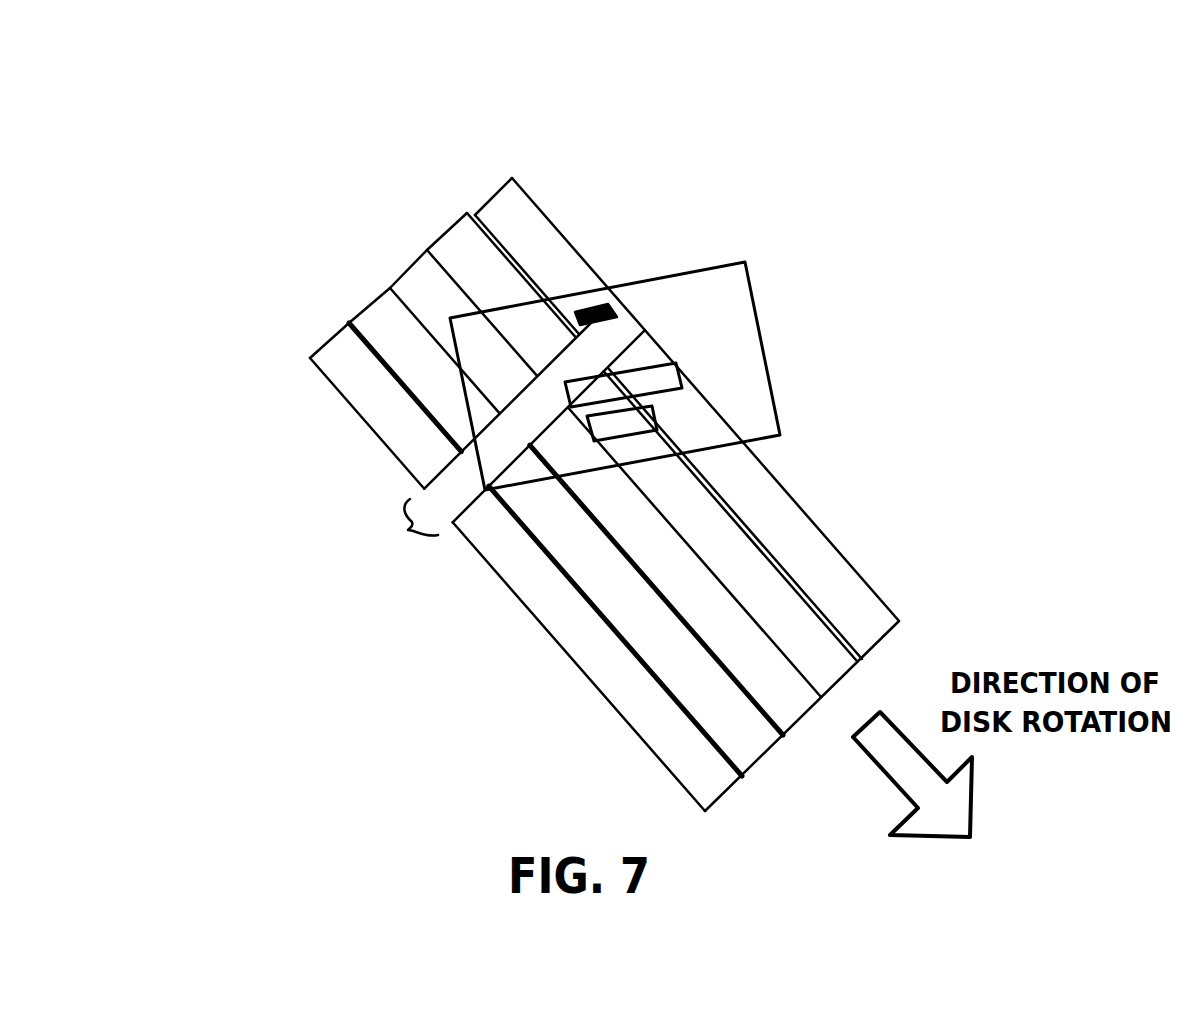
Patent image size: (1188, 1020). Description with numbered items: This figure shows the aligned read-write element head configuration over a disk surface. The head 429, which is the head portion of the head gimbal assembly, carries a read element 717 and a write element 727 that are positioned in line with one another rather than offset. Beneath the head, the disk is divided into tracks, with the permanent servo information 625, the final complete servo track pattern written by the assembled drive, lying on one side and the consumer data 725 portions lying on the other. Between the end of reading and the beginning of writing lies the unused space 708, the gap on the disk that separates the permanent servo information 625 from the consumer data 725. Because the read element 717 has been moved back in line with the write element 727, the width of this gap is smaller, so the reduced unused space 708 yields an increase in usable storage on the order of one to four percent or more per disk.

The permanent servo track information 625 is at (625, 135).
The consumer data 725 is at (953, 508).
The head 429 is at (733, 293).
The read element 717 is at (617, 308).
The write element 727 is at (672, 375).
The unused space 708 is at (396, 541).